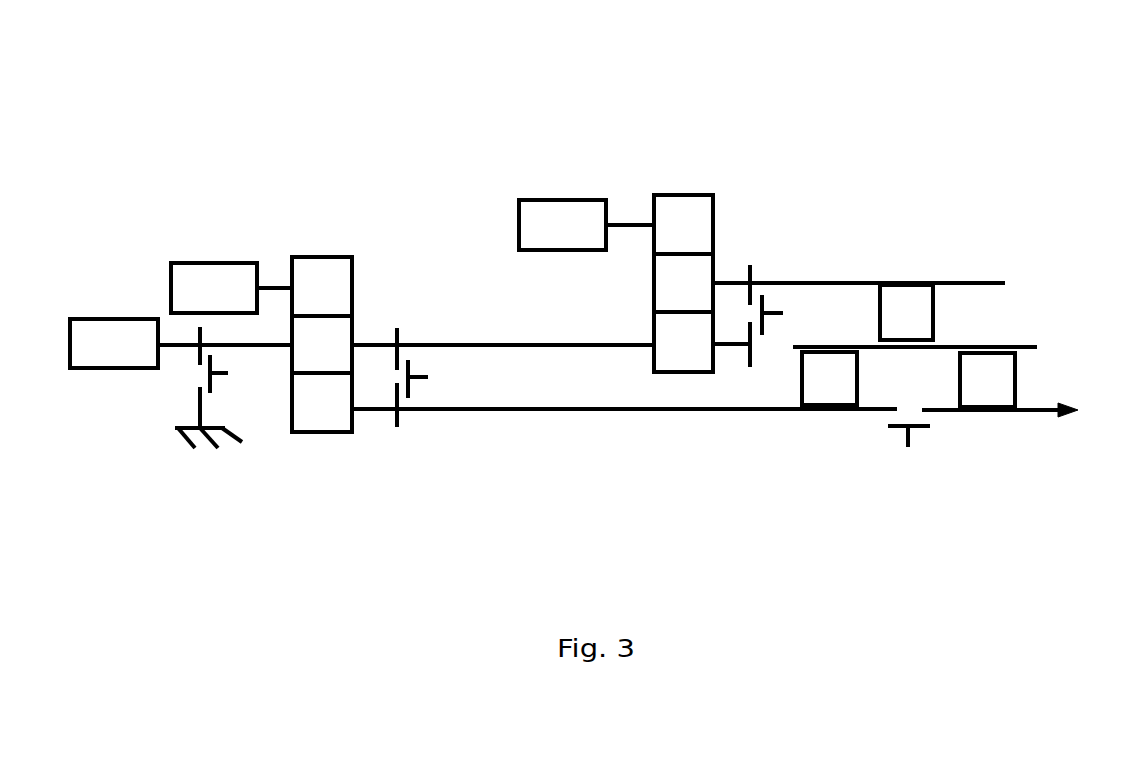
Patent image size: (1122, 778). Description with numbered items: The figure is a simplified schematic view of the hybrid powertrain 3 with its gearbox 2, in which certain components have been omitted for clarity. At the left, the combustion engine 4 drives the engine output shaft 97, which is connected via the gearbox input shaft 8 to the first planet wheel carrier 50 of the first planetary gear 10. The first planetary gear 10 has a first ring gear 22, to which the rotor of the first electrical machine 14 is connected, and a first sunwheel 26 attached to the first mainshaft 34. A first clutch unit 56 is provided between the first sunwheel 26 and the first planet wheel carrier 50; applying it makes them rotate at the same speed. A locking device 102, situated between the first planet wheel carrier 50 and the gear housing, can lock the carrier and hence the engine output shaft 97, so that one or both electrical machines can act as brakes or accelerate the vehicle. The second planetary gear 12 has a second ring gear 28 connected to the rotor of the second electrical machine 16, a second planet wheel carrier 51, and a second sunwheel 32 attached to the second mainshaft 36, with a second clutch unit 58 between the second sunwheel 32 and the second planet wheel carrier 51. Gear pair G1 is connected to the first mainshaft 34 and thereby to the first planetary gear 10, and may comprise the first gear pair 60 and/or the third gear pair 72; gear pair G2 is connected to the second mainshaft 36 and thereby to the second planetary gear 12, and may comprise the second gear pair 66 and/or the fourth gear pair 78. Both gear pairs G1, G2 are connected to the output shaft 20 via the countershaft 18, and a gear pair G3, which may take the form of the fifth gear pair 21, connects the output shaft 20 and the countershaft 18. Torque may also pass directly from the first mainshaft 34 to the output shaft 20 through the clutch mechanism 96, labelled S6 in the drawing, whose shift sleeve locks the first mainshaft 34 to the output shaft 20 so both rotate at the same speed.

The gearbox 2 is at (822, 150).
The hybrid powertrain 3 is at (628, 99).
The combustion engine 4 is at (95, 330).
The input shaft 8 is at (257, 343).
The first planetary gear 10 is at (337, 215).
The second planetary gear 12 is at (708, 144).
The first electrical machine 14 is at (217, 268).
The second electrical machine 16 is at (555, 210).
The countershaft 18 is at (1025, 343).
The output shaft 20 is at (1043, 407).
The fifth gear pair 21 is at (1000, 393).
The first ring gear 22 is at (337, 285).
The first sunwheel 26 is at (322, 418).
The second ring gear 28 is at (708, 227).
The second sunwheel 32 is at (692, 360).
The first mainshaft 34 is at (533, 410).
The second mainshaft 36 is at (825, 282).
The first planet wheel carrier 50 is at (340, 337).
The second planet wheel carrier 51 is at (660, 290).
The first clutch unit 56 is at (413, 379).
The second clutch unit 58 is at (783, 310).
The first gear pair 60 is at (830, 428).
The second gear pair 66 is at (921, 269).
The third gear pair 72 is at (830, 395).
The fourth gear pair 78 is at (910, 295).
The clutch mechanism 96 is at (912, 443).
The engine output shaft 97 is at (178, 347).
The locking device 102 is at (229, 374).
The gear pair G1 is at (830, 428).
The gear pair G2 is at (921, 269).
The gear pair G3 is at (1025, 425).
The shifting element S6 is at (941, 486).